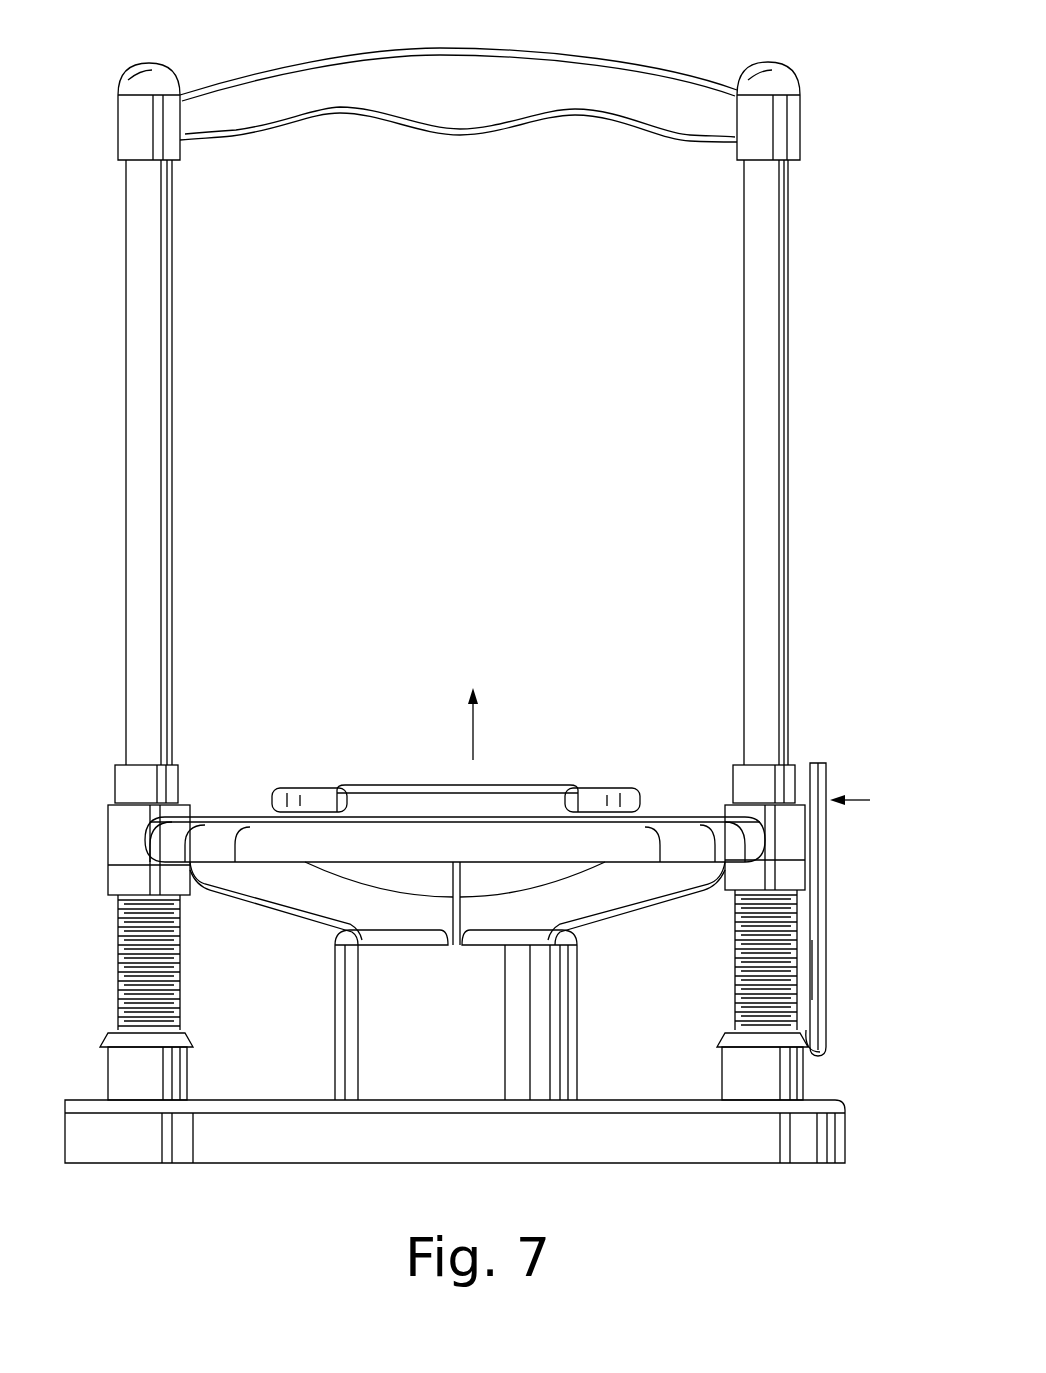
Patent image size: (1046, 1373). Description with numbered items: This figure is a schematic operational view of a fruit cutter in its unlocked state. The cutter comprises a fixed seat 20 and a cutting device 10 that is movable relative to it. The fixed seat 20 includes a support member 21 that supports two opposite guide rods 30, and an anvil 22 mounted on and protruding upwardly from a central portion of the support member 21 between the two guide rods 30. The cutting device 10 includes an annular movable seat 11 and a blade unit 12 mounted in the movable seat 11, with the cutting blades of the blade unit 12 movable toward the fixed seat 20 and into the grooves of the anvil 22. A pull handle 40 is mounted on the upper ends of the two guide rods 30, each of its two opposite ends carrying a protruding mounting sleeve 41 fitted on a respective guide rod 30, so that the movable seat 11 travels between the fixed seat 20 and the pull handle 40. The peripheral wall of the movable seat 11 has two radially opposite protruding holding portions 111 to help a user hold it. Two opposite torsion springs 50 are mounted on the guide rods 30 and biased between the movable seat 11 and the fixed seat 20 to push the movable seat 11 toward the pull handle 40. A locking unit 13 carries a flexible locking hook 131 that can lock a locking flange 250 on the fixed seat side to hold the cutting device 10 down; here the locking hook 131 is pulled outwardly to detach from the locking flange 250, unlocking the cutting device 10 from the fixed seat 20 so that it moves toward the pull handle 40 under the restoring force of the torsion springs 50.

The cutting device 10 is at (600, 768).
The movable seat 11 is at (240, 815).
The holding portions 111 is at (441, 785).
The blade unit 12 is at (274, 942).
The locking unit 13 is at (840, 873).
The locking hook 131 is at (828, 962).
The fixed seat 20 is at (288, 1202).
The support member 21 is at (281, 1104).
The anvil 22 is at (578, 1027).
The locking flange 250 is at (812, 1036).
The guide rods 30 is at (781, 482).
The pull handle 40 is at (440, 60).
The mounting sleeve 41 is at (806, 118).
The torsion springs 50 is at (797, 916).